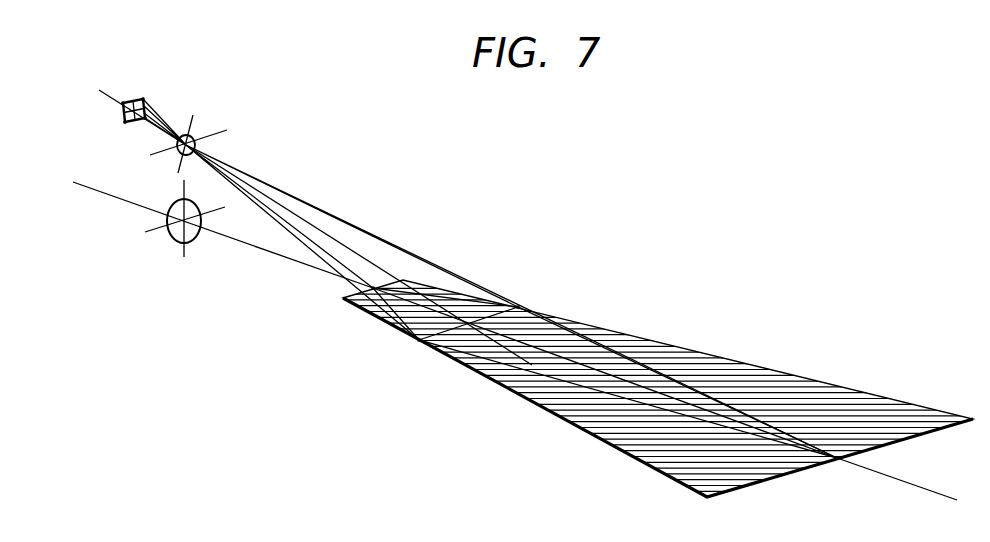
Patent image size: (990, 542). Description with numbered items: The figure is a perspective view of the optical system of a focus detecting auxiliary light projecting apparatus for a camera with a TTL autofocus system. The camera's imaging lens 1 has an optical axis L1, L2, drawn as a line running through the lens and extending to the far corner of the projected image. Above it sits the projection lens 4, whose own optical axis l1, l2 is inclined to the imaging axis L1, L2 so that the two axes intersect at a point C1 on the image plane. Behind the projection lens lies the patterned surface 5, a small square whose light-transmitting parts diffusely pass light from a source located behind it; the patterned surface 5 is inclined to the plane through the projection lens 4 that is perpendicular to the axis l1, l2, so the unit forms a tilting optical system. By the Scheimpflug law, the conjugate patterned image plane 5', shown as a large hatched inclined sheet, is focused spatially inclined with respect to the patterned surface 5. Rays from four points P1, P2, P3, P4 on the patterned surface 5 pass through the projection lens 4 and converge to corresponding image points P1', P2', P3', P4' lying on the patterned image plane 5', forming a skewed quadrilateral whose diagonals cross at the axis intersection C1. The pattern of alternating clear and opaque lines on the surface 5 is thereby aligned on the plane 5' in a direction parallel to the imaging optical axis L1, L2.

The imaging lens 1 is at (172, 236).
The projection lens 4 is at (194, 133).
The patterned surface 5 is at (140, 92).
The patterned image plane 5' is at (660, 388).
The point on the patterned surface P1 is at (115, 81).
The point on the patterned surface P2 is at (131, 142).
The point on the patterned surface P3 is at (104, 129).
The point on the patterned surface P4 is at (164, 94).
The image point on the patterned image plane P1' is at (390, 252).
The image point on the patterned image plane P2' is at (834, 483).
The image point on the patterned image plane P3' is at (534, 286).
The image point on the patterned image plane P4' is at (395, 365).
The intersection point of the optical axes C1 is at (467, 325).
The optical axis of the projection lens (object-side end) l1 is at (131, 107).
The optical axis of the projection lens (image-side end) l2 is at (369, 272).
The optical axis of the imaging lens (object-side end) L1 is at (207, 228).
The optical axis of the imaging lens (image-side end) L2 is at (908, 488).